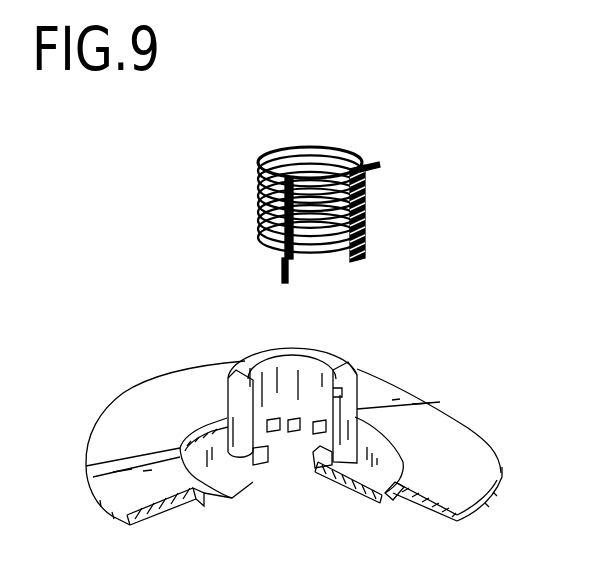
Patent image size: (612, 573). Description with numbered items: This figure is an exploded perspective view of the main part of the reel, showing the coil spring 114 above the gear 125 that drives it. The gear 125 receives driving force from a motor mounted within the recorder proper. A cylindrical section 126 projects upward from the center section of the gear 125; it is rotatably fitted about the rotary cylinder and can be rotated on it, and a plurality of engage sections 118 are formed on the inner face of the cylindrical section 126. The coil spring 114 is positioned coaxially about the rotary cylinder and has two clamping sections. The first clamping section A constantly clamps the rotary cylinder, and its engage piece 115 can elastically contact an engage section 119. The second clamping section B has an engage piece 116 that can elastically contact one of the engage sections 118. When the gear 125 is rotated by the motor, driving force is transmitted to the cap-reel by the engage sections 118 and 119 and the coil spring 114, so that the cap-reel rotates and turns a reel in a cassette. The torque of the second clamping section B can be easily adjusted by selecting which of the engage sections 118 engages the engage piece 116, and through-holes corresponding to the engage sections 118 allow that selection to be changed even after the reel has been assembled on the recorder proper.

The coil spring 114 is at (252, 227).
The engage piece 115 is at (374, 164).
The engage piece 116 is at (282, 268).
The engage sections 118 is at (258, 441).
The engage section 119 is at (349, 365).
The gear 125 is at (470, 450).
The cylindrical section 126 is at (357, 408).
The first clamping section A is at (363, 181).
The second clamping section B is at (362, 232).